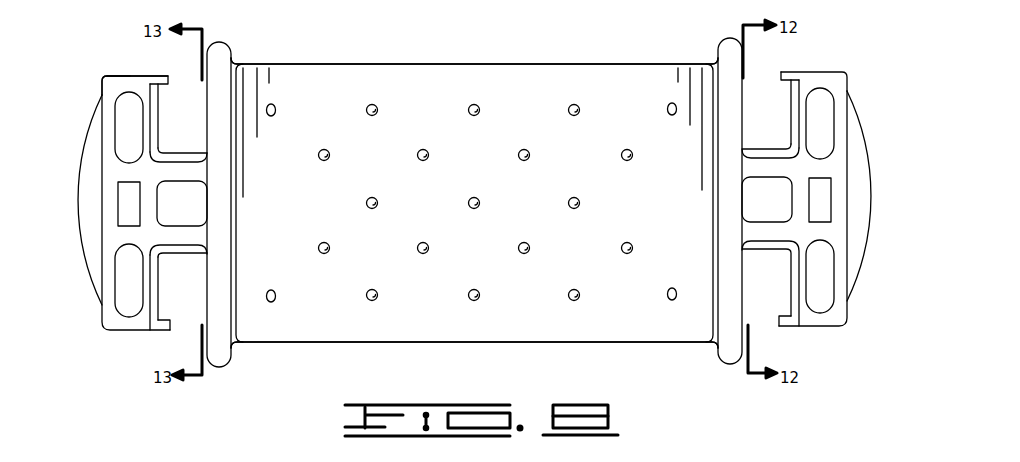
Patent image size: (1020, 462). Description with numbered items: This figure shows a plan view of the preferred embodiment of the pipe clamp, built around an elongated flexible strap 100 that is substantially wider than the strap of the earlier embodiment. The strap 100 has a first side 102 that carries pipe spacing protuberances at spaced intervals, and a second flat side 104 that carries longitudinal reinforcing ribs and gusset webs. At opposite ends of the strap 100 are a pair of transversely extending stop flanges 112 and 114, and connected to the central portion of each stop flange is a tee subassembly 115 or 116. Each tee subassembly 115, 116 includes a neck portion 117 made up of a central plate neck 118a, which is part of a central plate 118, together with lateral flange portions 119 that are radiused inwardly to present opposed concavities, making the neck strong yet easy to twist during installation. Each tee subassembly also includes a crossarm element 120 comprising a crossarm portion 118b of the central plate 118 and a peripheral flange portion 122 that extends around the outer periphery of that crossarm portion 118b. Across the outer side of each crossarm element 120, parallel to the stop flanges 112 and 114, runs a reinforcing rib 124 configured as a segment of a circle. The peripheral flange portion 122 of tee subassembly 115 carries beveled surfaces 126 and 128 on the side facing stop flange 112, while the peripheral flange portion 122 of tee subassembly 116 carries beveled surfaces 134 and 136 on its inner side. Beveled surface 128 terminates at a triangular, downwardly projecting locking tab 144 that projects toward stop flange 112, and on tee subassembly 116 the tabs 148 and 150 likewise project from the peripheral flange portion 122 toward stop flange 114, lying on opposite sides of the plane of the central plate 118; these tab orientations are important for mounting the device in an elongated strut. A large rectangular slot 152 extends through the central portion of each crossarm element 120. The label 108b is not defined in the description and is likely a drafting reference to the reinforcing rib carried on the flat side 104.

The elongated flexible strap 100 is at (285, 350).
The first side 102 is at (537, 215).
The second flat side 104 is at (529, 151).
The slot 108b is at (125, 121).
The stop flange 112 is at (218, 360).
The stop flange 114 is at (730, 356).
The tee subassembly 115 is at (96, 340).
The tee subassembly 116 is at (851, 333).
The neck portion 117 is at (186, 153).
The central plate 118 is at (128, 289).
The central plate neck 118a is at (195, 208).
The crossarm portion 118b is at (822, 273).
The lateral flange portions 119 is at (187, 245).
The crossarm element 120 is at (153, 68).
The peripheral flange portion 122 is at (121, 84).
The reinforcing rib 124 is at (89, 241).
The beveled surface 126 is at (153, 115).
The beveled surface 128 is at (157, 291).
The beveled surface 134 is at (796, 107).
The beveled surface 136 is at (796, 297).
The locking tab 144 is at (163, 328).
The locking tab 148 is at (788, 324).
The locking tab 150 is at (782, 70).
The rectangular slot 152 is at (128, 205).